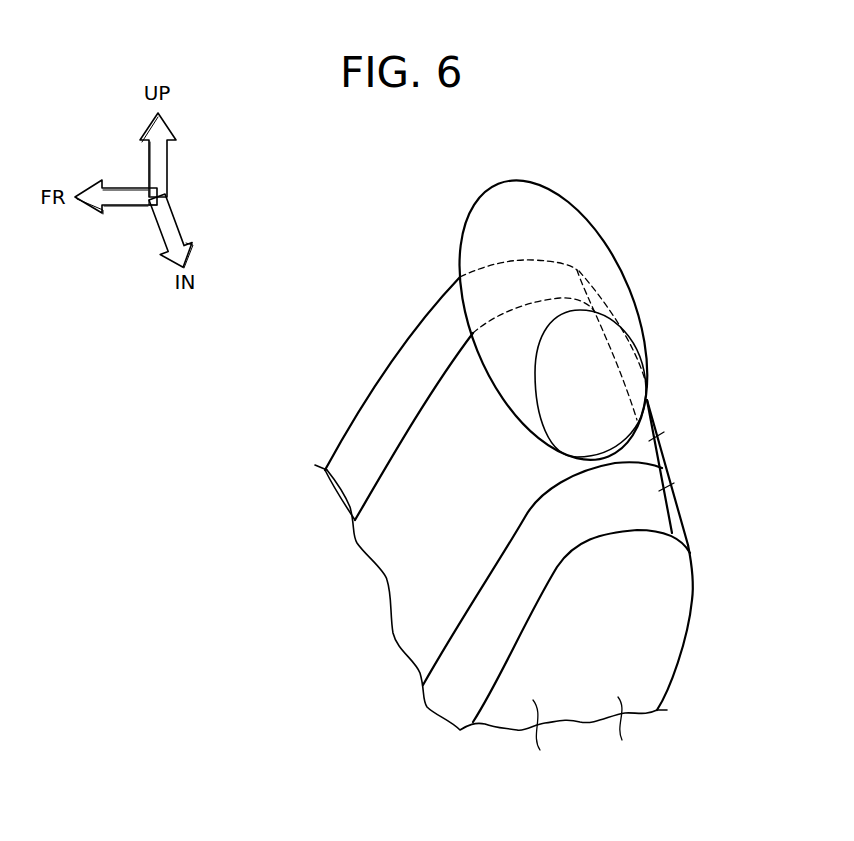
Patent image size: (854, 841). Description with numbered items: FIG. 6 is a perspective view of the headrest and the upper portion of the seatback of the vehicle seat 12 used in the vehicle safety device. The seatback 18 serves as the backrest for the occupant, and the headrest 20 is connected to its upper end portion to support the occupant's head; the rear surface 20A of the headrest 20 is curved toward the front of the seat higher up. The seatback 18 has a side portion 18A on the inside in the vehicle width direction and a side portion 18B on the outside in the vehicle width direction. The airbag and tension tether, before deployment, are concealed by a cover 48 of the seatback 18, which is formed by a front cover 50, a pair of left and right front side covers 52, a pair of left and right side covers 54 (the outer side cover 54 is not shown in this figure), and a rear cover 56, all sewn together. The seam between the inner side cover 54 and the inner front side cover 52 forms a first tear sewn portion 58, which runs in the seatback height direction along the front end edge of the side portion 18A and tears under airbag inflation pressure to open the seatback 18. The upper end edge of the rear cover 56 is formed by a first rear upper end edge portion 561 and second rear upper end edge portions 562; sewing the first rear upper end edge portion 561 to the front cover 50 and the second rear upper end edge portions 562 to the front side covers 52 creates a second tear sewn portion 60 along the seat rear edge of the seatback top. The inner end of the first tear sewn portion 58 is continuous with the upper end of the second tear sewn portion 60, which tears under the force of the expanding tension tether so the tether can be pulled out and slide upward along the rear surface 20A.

The vehicle seat 12 is at (352, 408).
The seatback 18 is at (680, 652).
The side portion on the inside in the vehicle width direction 18A is at (539, 741).
The side portion on the outside in the vehicle width direction 18B is at (383, 370).
The headrest 20 is at (477, 210).
The rear surface 20A is at (607, 250).
The cover 48 is at (400, 534).
The front cover 50 is at (417, 582).
The front side cover 52 is at (353, 450).
The side cover 54 is at (623, 735).
The rear cover 56 is at (683, 508).
The first rear upper end edge portion 561 is at (662, 432).
The second rear upper end edge portion 562 is at (676, 488).
The first tear sewn portion 58 is at (493, 688).
The second tear sewn portion 60 is at (672, 470).